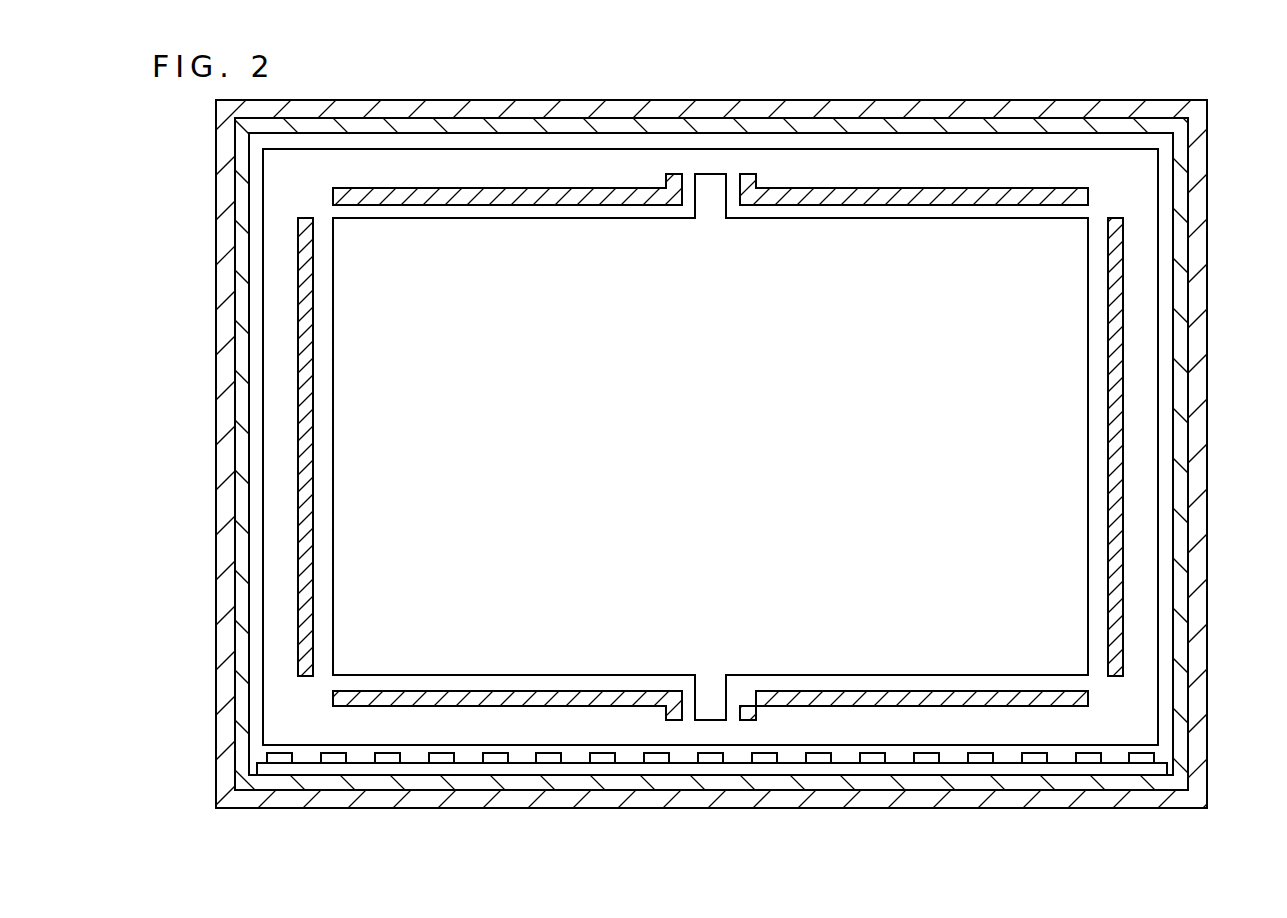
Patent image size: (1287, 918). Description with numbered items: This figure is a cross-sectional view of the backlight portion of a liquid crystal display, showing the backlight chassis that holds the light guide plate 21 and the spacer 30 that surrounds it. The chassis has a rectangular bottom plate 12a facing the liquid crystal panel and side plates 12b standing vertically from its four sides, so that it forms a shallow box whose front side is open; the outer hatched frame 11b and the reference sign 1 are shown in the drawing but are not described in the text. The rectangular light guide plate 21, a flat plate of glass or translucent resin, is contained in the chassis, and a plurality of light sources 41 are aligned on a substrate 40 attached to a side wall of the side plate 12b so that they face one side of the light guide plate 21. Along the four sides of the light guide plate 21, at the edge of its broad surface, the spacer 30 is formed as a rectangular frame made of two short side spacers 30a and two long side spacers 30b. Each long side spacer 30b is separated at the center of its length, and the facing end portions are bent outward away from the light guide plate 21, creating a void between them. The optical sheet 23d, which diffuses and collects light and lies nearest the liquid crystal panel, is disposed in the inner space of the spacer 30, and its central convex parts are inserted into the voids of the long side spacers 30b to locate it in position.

The light emitting device 1 is at (1252, 82).
The sealing member outer frame 11b is at (1198, 318).
The bottom plate 12a is at (992, 143).
The side plate 12b is at (1182, 227).
The light guide plate 21 is at (1157, 686).
The optical sheet 23d is at (1068, 543).
The spacer 30 is at (705, 453).
The short side spacer 30a is at (305, 364).
The long side spacer 30b is at (783, 192).
The substrate 40 is at (1120, 774).
The light source 41 is at (1150, 758).